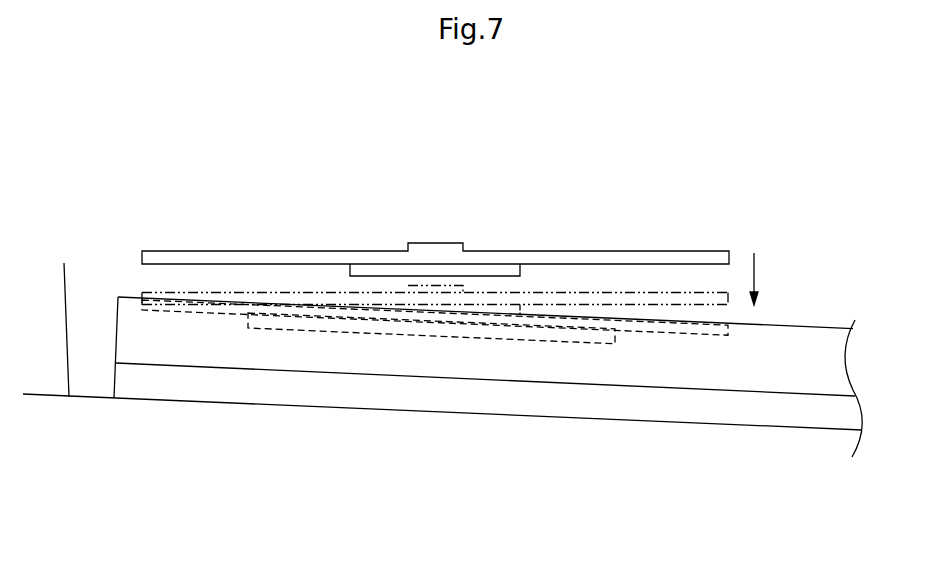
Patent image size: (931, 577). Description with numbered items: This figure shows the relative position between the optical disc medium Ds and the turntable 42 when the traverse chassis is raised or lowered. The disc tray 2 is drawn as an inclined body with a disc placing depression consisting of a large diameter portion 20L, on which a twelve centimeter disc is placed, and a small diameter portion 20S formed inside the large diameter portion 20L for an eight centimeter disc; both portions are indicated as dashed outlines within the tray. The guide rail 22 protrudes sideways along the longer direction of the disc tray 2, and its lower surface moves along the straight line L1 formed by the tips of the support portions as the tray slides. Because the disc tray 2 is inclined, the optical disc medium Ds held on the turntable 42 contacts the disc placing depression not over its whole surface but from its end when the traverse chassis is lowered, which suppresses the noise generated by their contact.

The optical disc medium Ds is at (223, 290).
The turntable 42 is at (512, 312).
The disc tray 2 is at (788, 348).
The guide rail 22 is at (580, 408).
The straight line L1 is at (66, 318).
The large diameter portion 20L is at (268, 306).
The small diameter portion 20S is at (390, 332).